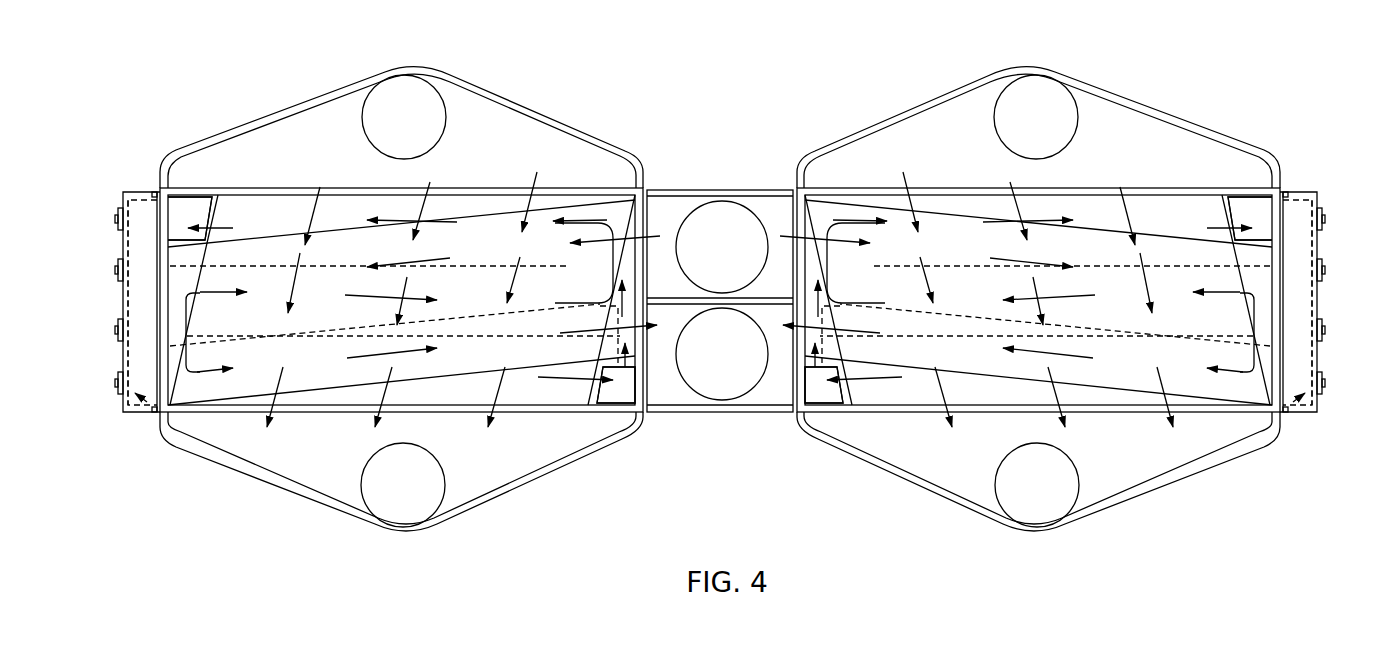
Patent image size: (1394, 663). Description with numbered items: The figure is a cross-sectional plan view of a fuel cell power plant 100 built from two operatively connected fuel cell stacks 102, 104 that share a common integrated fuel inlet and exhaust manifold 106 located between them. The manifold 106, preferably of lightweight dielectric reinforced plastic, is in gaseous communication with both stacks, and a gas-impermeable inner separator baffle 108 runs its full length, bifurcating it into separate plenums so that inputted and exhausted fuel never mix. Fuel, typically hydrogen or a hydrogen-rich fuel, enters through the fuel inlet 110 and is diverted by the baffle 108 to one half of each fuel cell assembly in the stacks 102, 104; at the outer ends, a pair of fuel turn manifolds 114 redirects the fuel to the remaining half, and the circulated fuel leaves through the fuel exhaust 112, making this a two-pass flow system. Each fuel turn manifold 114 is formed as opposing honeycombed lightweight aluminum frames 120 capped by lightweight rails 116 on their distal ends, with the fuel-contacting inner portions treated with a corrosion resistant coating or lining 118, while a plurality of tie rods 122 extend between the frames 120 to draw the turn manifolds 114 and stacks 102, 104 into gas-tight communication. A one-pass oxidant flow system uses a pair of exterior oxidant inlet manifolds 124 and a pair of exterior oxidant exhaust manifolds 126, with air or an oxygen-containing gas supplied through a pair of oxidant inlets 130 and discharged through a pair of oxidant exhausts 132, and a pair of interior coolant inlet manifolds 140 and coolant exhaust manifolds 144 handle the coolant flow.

The fuel cell power plant 100 is at (209, 106).
The fuel cell stack 102 is at (612, 200).
The fuel cell stack 104 is at (830, 210).
The integrated fuel inlet and exhaust manifold 106 is at (705, 188).
The inner separator baffle 108 is at (665, 295).
The fuel inlet 110 is at (720, 220).
The fuel exhaust 112 is at (718, 383).
The fuel turn manifold 114 is at (135, 184).
The lightweight rail 116 is at (145, 252).
The corrosion resistant coating or lining 118 is at (157, 415).
The frame 120 is at (124, 293).
The tie rod 122 is at (117, 218).
The exterior oxidant inlet manifold 124 is at (557, 118).
The exterior oxidant exhaust manifold 126 is at (526, 496).
The oxidant inlet 130 is at (400, 90).
The oxidant exhaust 132 is at (408, 508).
The interior coolant inlet manifold 140 is at (618, 393).
The coolant exhaust manifold 144 is at (185, 205).